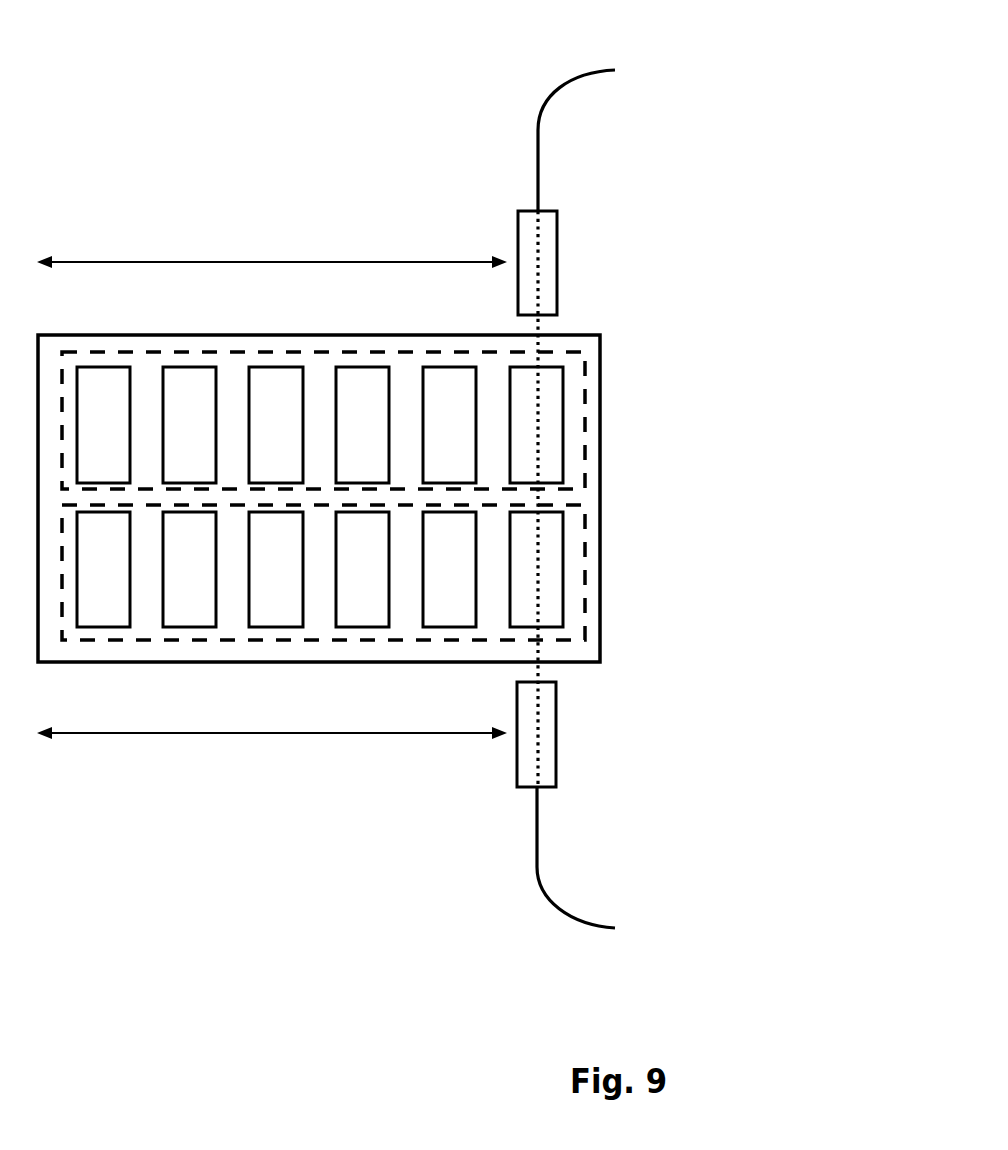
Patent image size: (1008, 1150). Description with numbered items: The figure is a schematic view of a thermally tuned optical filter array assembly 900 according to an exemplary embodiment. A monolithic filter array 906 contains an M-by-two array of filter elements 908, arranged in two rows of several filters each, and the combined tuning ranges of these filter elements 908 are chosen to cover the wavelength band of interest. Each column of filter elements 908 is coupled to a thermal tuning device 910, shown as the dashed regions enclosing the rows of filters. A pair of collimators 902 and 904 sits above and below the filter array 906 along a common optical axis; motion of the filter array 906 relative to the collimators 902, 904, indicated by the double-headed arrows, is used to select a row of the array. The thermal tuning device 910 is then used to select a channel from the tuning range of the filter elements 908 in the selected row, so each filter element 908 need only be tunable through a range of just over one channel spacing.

The roll-to-roll processing system 900 is at (248, 130).
The collimator 902 is at (557, 252).
The collimator 904 is at (556, 733).
The monolithic filter array 906 is at (600, 460).
The filter elements 908 is at (563, 555).
The thermal tuning device 910 is at (587, 373).